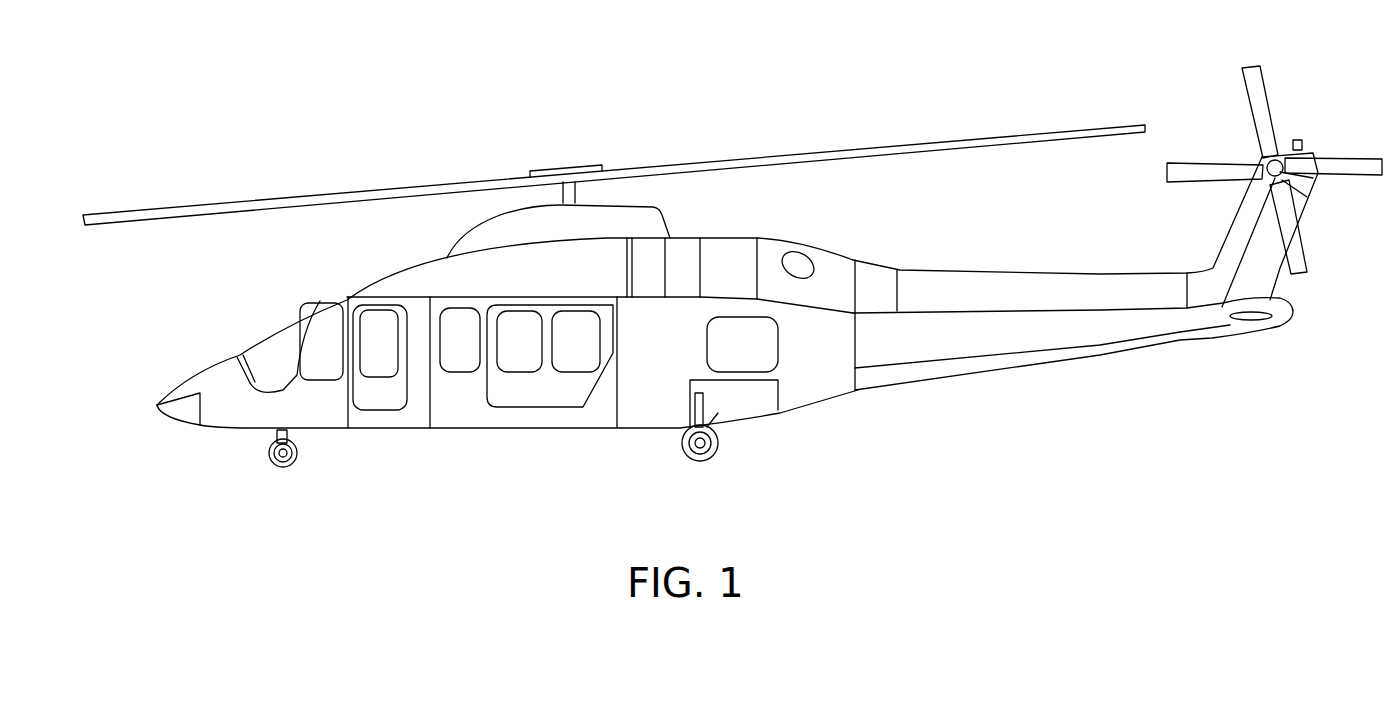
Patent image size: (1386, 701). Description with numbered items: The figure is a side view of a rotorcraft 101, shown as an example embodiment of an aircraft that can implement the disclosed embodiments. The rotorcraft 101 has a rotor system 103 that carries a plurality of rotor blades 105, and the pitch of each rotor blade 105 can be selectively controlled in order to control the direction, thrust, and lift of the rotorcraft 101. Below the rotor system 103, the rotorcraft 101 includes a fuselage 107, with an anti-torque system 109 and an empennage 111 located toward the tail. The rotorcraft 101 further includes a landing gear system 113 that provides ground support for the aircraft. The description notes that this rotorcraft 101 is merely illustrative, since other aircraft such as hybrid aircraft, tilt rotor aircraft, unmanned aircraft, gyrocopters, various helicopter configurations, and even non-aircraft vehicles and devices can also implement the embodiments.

The rotorcraft 101 is at (970, 99).
The rotor system 103 is at (589, 130).
The rotor blades 105 is at (345, 193).
The fuselage 107 is at (473, 430).
The anti-torque system 109 is at (1297, 116).
The empennage 111 is at (1023, 368).
The landing gear system 113 is at (698, 461).